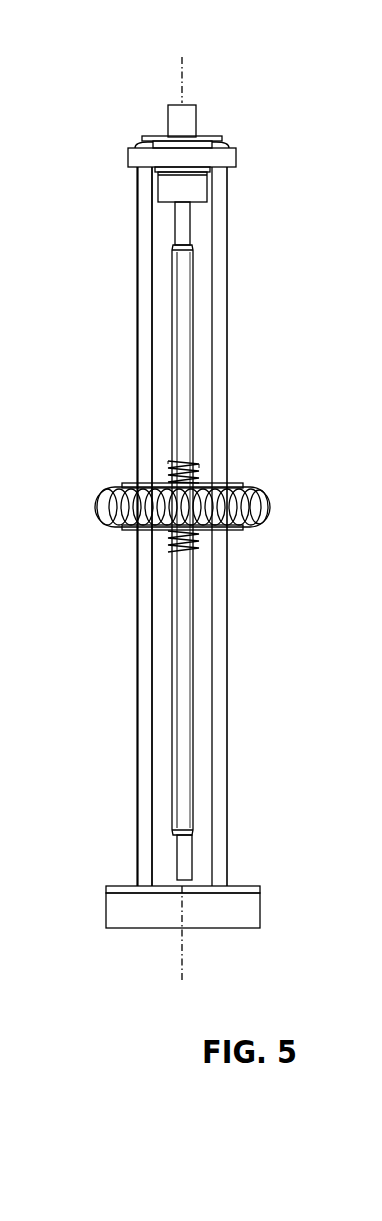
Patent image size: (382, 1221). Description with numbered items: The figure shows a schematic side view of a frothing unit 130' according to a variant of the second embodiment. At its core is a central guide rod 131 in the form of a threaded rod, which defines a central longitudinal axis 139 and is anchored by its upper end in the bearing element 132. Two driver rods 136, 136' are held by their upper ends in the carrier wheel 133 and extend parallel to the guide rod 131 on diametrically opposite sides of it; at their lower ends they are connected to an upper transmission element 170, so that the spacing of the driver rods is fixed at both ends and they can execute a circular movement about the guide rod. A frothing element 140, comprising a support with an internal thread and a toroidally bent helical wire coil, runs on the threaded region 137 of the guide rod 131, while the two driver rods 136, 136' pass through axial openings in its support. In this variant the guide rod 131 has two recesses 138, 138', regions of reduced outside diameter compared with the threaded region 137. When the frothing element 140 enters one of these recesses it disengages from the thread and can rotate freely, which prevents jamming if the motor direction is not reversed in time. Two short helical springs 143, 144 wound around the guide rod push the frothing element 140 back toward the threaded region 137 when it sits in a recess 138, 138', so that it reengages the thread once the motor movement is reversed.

The frothing unit 130' is at (161, 500).
The central longitudinal axis 139 is at (181, 82).
The bearing element 132 is at (183, 127).
The carrier wheel 133 is at (228, 157).
The driver rod 136 is at (152, 526).
The driver rod 136' is at (239, 526).
The recess 138 is at (237, 206).
The guide rod 131 is at (183, 338).
The threaded region 137 is at (185, 662).
The helical spring 143 is at (193, 463).
The frothing element 140 is at (100, 492).
The helical spring 144 is at (195, 545).
The recess 138' is at (243, 854).
The upper transmission element 170 is at (113, 907).